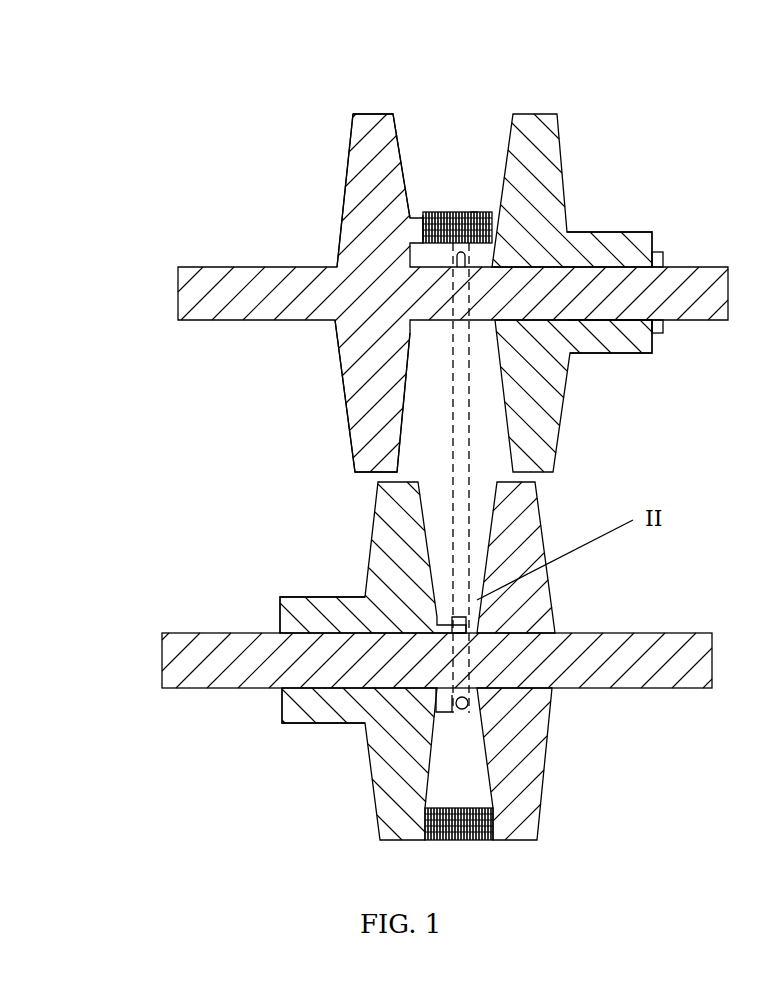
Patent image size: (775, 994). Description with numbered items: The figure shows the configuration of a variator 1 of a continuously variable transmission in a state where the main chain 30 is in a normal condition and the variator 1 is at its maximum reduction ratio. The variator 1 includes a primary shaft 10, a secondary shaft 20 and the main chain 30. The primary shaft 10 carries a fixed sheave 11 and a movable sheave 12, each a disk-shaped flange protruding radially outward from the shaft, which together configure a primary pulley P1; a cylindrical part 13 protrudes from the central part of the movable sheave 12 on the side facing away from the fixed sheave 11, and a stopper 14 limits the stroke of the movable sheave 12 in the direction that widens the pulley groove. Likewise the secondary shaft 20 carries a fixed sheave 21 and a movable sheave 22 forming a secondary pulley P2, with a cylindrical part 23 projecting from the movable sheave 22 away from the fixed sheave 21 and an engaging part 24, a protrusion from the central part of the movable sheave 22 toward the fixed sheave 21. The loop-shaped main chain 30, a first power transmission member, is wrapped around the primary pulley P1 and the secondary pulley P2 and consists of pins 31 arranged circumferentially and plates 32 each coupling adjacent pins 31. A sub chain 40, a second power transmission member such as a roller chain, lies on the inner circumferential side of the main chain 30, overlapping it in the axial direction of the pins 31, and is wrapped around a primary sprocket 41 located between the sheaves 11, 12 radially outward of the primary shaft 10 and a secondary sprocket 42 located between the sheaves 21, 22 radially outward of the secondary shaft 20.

The variator 1 is at (198, 155).
The primary shaft 10 is at (178, 287).
The fixed sheave 11 is at (355, 117).
The movable sheave 12 is at (552, 118).
The cylindrical part 13 is at (607, 233).
The stopper 14 is at (661, 253).
The secondary shaft 20 is at (162, 647).
The fixed sheave 21 is at (537, 820).
The movable sheave 22 is at (378, 817).
The cylindrical part 23 is at (307, 723).
The engaging part 24 is at (426, 835).
The main chain 30 is at (452, 200).
The pins 31 is at (417, 218).
The plates 32 is at (473, 213).
The sub chain 40 is at (452, 453).
The primary sprocket 41 is at (458, 328).
The secondary sprocket 42 is at (458, 617).
The primary pulley P1 is at (330, 138).
The secondary pulley P2 is at (563, 788).